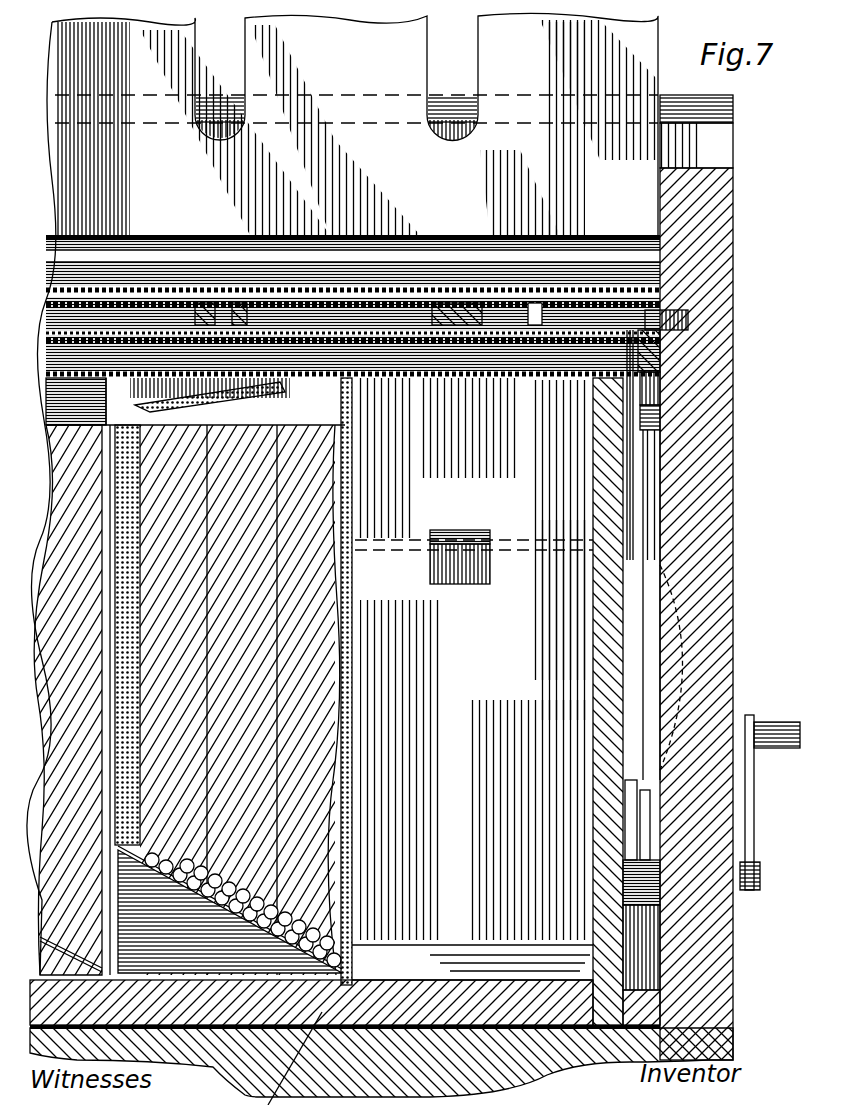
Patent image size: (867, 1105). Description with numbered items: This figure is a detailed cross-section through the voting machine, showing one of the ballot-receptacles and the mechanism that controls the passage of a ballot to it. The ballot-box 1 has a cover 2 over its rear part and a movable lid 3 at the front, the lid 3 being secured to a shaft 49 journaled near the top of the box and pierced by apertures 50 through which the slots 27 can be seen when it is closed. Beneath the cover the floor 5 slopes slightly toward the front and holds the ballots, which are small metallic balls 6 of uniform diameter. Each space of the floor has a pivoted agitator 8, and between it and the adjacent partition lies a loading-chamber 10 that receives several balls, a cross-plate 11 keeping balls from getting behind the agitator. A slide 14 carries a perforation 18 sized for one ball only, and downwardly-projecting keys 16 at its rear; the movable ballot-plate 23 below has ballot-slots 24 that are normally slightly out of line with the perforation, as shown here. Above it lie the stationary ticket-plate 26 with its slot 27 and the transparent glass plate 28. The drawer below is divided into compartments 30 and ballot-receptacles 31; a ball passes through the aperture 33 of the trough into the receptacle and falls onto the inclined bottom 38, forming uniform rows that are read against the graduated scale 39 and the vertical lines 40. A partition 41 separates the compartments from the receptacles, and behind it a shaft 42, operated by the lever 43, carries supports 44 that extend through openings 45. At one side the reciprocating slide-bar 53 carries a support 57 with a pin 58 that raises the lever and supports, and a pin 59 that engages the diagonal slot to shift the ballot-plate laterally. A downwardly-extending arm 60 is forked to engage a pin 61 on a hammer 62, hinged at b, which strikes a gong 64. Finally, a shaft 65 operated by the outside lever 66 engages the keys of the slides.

The ballot-box 1 is at (733, 248).
The cover 2 is at (733, 103).
The movable lid 3 is at (342, 494).
The floor 5 is at (308, 700).
The balls 6 is at (232, 885).
The agitator 8 is at (72, 700).
The loading-chamber 10 is at (242, 700).
The cross-plate 11 is at (532, 265).
The slide 14 is at (455, 330).
The keys 16 is at (173, 700).
The perforation 18 is at (257, 292).
The ballot-plate 23 is at (655, 380).
The ballot-slots 24 is at (262, 385).
The ticket-plate 26 is at (165, 292).
The slot 27 is at (222, 292).
The glass plate 28 is at (108, 292).
The compartments 30 is at (467, 681).
The ballot-receptacles 31 is at (120, 978).
The aperture 33 is at (140, 408).
The inclined bottom 38 is at (270, 930).
The graduated scale 39 is at (140, 735).
The vertical lines 40 is at (277, 680).
The partition 41 is at (562, 620).
The shaft 42 is at (500, 545).
The lever 43 is at (625, 555).
The supports 44 is at (450, 530).
The openings 45 is at (455, 585).
The shaft 49 is at (330, 235).
The apertures 50 is at (247, 68).
The slide-bar 53 is at (655, 355).
The support 57 is at (640, 490).
The pin 58 is at (760, 592).
The pin 59 is at (688, 318).
The arm 60 is at (740, 730).
The pin 61 is at (650, 820).
The hammer 62 is at (648, 870).
The gong 64 is at (645, 637).
The shaft 65 is at (760, 870).
The lever 66 is at (745, 790).
The hinge b is at (645, 895).